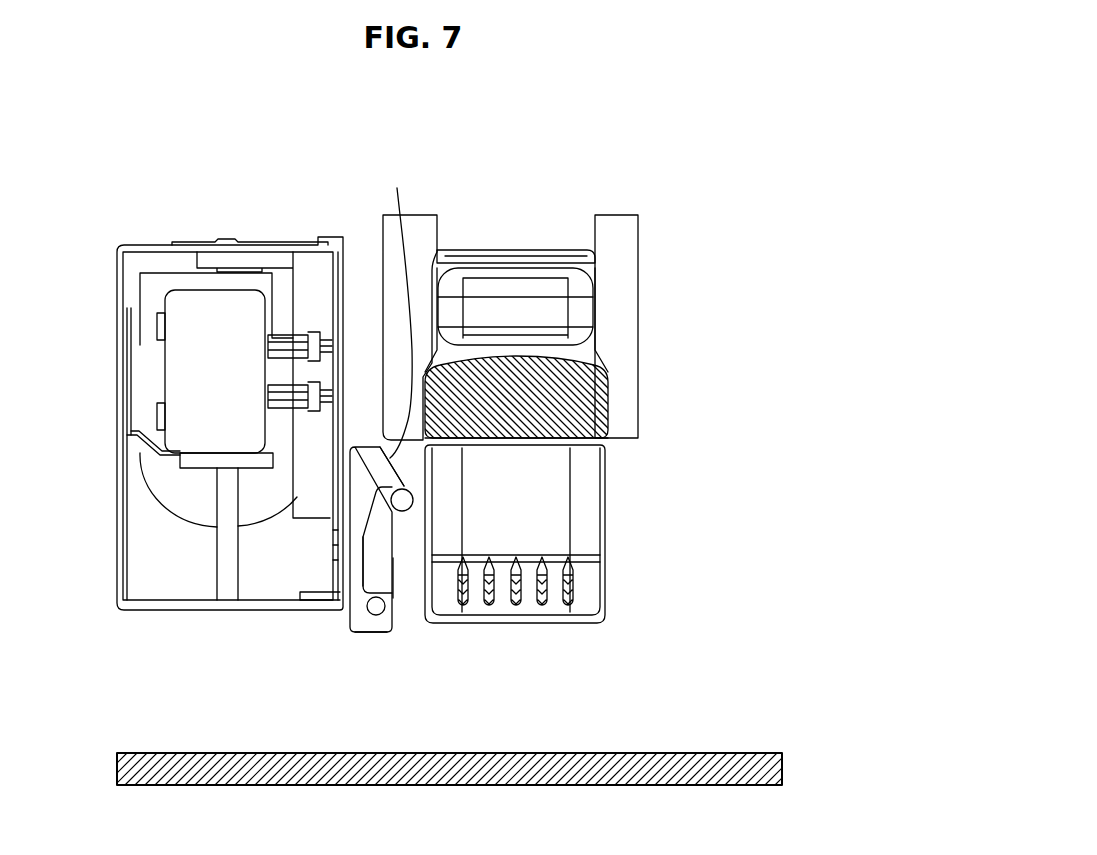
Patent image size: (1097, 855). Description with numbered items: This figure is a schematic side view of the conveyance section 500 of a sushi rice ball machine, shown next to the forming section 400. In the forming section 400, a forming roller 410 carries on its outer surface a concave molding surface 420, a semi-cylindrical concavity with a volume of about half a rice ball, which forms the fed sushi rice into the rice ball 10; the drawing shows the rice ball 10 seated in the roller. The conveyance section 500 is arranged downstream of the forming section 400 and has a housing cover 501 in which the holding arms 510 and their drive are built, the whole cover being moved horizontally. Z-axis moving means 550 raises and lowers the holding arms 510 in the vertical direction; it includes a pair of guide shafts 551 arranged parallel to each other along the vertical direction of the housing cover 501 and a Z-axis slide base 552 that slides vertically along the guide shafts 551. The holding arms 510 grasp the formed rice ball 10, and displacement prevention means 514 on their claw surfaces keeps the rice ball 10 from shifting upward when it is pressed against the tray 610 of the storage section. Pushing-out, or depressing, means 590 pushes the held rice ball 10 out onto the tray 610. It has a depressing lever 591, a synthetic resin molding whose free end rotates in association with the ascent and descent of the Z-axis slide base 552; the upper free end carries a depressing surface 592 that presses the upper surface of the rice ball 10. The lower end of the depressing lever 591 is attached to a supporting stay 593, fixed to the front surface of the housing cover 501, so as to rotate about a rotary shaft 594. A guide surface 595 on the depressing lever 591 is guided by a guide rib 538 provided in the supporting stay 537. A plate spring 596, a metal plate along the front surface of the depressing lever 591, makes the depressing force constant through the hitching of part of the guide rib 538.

The conveyance section 500 is at (273, 176).
The housing cover 501 is at (143, 246).
The Z-axis moving means 550 is at (108, 376).
The guide shafts 551 is at (216, 581).
The Z-axis slide base 552 is at (180, 462).
The depressing means 590 is at (341, 631).
The depressing lever 591 is at (379, 646).
The depressing surface 592 is at (408, 311).
The supporting stay 593 is at (393, 543).
The rotary shaft 594 is at (372, 615).
The guide surface 595 is at (363, 537).
The plate spring 596 is at (395, 578).
The supporting stay 537 is at (417, 478).
The guide rib 538 is at (414, 500).
The holding arms 510 is at (663, 523).
The displacement prevention means 514 is at (579, 590).
The forming section 400 is at (728, 266).
The forming roller 410 is at (643, 327).
The concave molding surface 420 is at (514, 308).
The rice ball 10 is at (595, 402).
The tray 610 is at (720, 751).